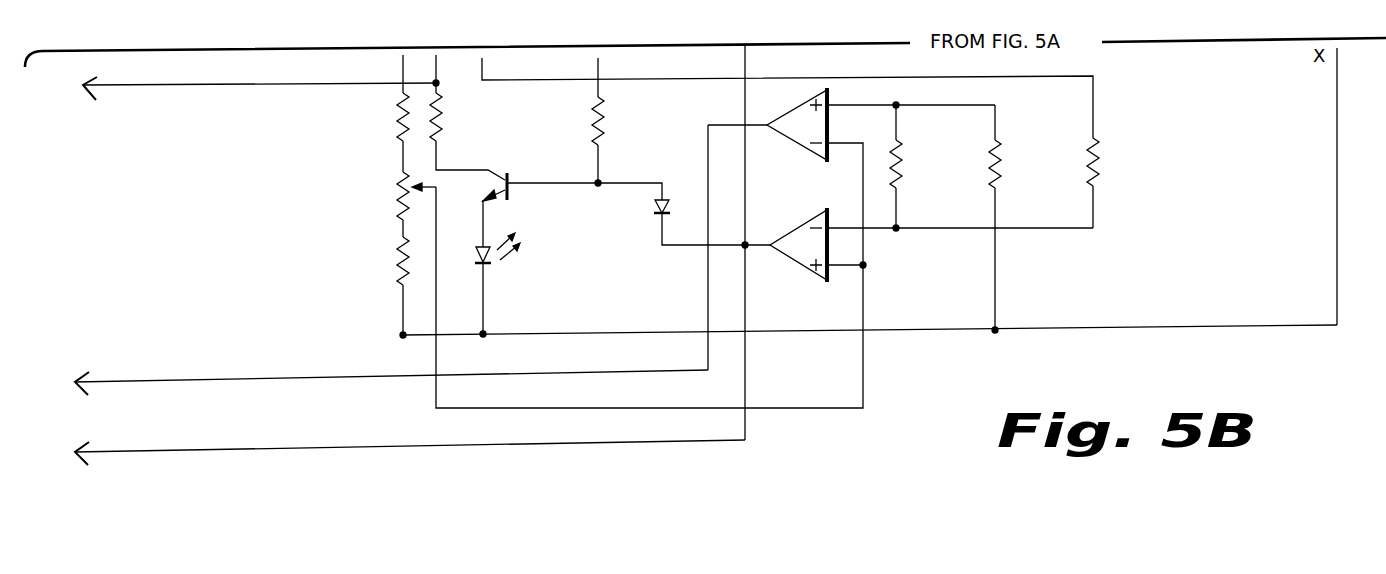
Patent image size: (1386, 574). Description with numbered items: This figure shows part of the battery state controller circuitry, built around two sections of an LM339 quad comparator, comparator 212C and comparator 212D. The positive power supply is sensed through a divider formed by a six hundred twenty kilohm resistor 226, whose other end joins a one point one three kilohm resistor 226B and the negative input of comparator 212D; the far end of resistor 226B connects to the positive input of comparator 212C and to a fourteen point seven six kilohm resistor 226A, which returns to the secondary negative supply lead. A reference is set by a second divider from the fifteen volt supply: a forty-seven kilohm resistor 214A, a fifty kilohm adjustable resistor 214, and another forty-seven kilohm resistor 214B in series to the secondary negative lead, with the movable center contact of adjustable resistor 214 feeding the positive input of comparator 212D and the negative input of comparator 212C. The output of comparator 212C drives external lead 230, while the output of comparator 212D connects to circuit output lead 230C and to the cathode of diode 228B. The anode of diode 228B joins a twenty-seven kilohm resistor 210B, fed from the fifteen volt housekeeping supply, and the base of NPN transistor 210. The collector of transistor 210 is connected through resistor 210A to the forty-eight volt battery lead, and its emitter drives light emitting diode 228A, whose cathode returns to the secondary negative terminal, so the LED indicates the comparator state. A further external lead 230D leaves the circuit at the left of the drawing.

The NPN transistor 210 is at (492, 168).
The resistor 210A is at (442, 136).
The resistor 210B is at (618, 107).
The comparator 212C is at (812, 99).
The comparator 212D is at (793, 227).
The adjustable resistor 214 is at (398, 186).
The resistor 214A is at (398, 108).
The resistor 214B is at (398, 257).
The resistor 226 is at (1100, 146).
The resistor 226A is at (1001, 168).
The resistor 226B is at (903, 168).
The light emitting diode 228A is at (485, 264).
The diode 228B is at (655, 204).
The external lead 230 is at (75, 378).
The circuit output lead 230C is at (75, 444).
The external lead 230D is at (90, 98).